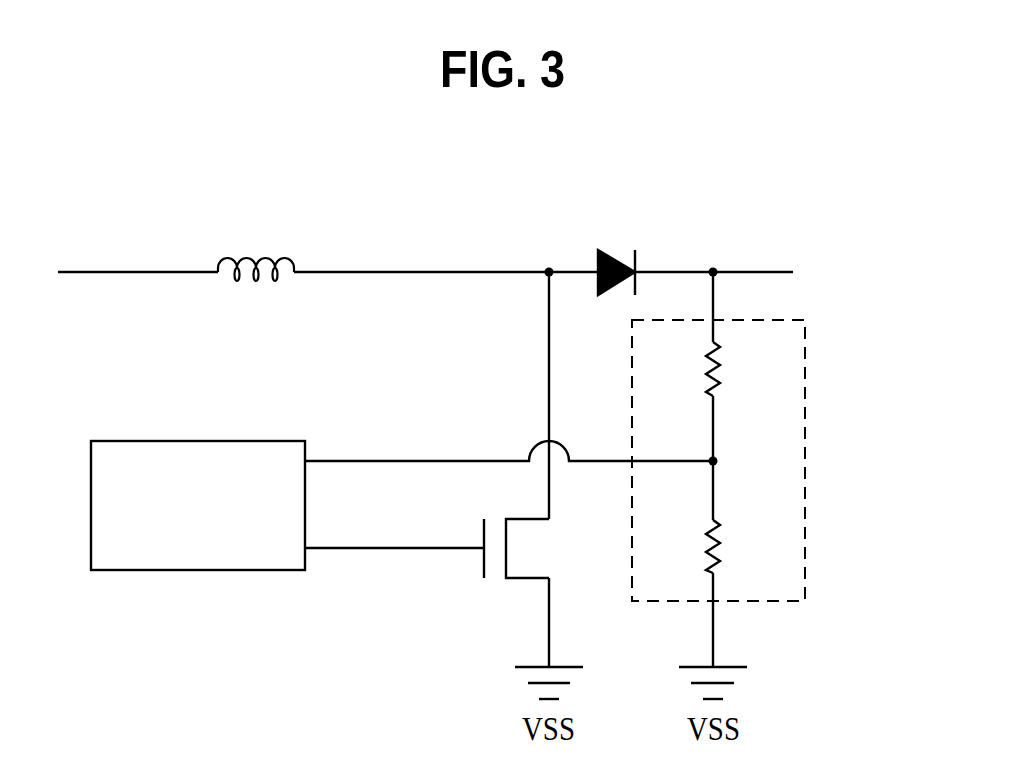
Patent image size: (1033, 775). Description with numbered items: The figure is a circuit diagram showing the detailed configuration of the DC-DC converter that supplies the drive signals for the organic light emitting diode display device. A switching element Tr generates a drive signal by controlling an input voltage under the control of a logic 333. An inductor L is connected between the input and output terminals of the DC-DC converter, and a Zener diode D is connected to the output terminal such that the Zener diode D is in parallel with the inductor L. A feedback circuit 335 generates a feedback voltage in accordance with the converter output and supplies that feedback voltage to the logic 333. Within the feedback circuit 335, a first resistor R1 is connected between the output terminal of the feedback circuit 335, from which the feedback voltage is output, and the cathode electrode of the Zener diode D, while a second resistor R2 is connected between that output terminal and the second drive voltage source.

The logic 333 is at (199, 572).
The feedback circuit 335 is at (805, 463).
The inductor L is at (256, 248).
The Zener diode D is at (616, 248).
The switching element Tr is at (536, 548).
The first resistor R1 is at (734, 369).
The second resistor R2 is at (735, 546).